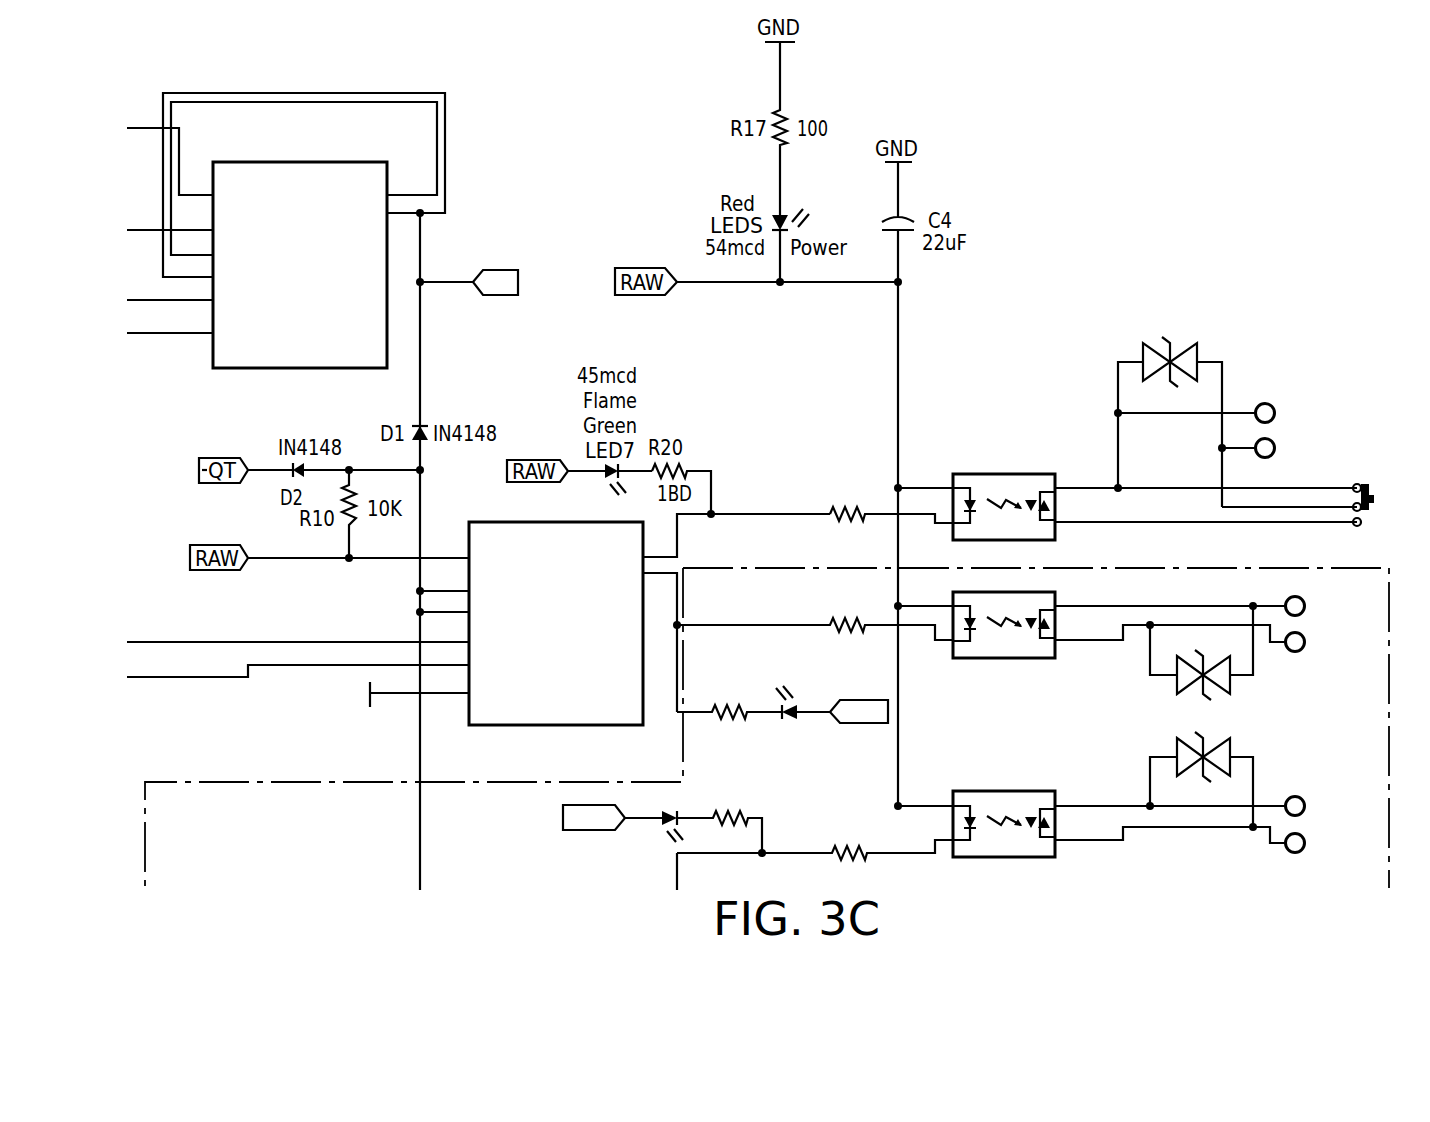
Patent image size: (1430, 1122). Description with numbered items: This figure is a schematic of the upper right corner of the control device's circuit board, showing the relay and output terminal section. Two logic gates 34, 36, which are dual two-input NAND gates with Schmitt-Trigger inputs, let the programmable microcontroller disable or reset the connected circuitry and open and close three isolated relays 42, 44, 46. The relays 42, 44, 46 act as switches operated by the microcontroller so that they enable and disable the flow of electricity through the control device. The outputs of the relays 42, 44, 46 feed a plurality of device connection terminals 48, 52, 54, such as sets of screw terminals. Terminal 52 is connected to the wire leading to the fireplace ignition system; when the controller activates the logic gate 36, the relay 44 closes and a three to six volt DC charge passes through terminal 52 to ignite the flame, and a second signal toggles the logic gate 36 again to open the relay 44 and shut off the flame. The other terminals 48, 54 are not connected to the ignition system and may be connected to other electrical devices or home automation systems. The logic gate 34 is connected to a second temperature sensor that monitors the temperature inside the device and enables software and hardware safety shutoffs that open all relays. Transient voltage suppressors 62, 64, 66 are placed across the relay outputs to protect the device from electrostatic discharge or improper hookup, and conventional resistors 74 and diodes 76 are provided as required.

The logic gate 34 is at (310, 185).
The logic gate 36 is at (583, 540).
The isolated relay 42 is at (1027, 482).
The isolated relay 44 is at (993, 648).
The isolated relay 46 is at (1042, 850).
The device connection terminal 48 is at (1270, 428).
The device connection terminal 52 is at (1303, 623).
The device connection terminal 54 is at (1298, 827).
The transient voltage suppressor 62 is at (1190, 358).
The transient voltage suppressor 64 is at (1187, 677).
The transient voltage suppressor 66 is at (1183, 772).
The resistor 74 is at (832, 618).
The diode 76 is at (793, 703).